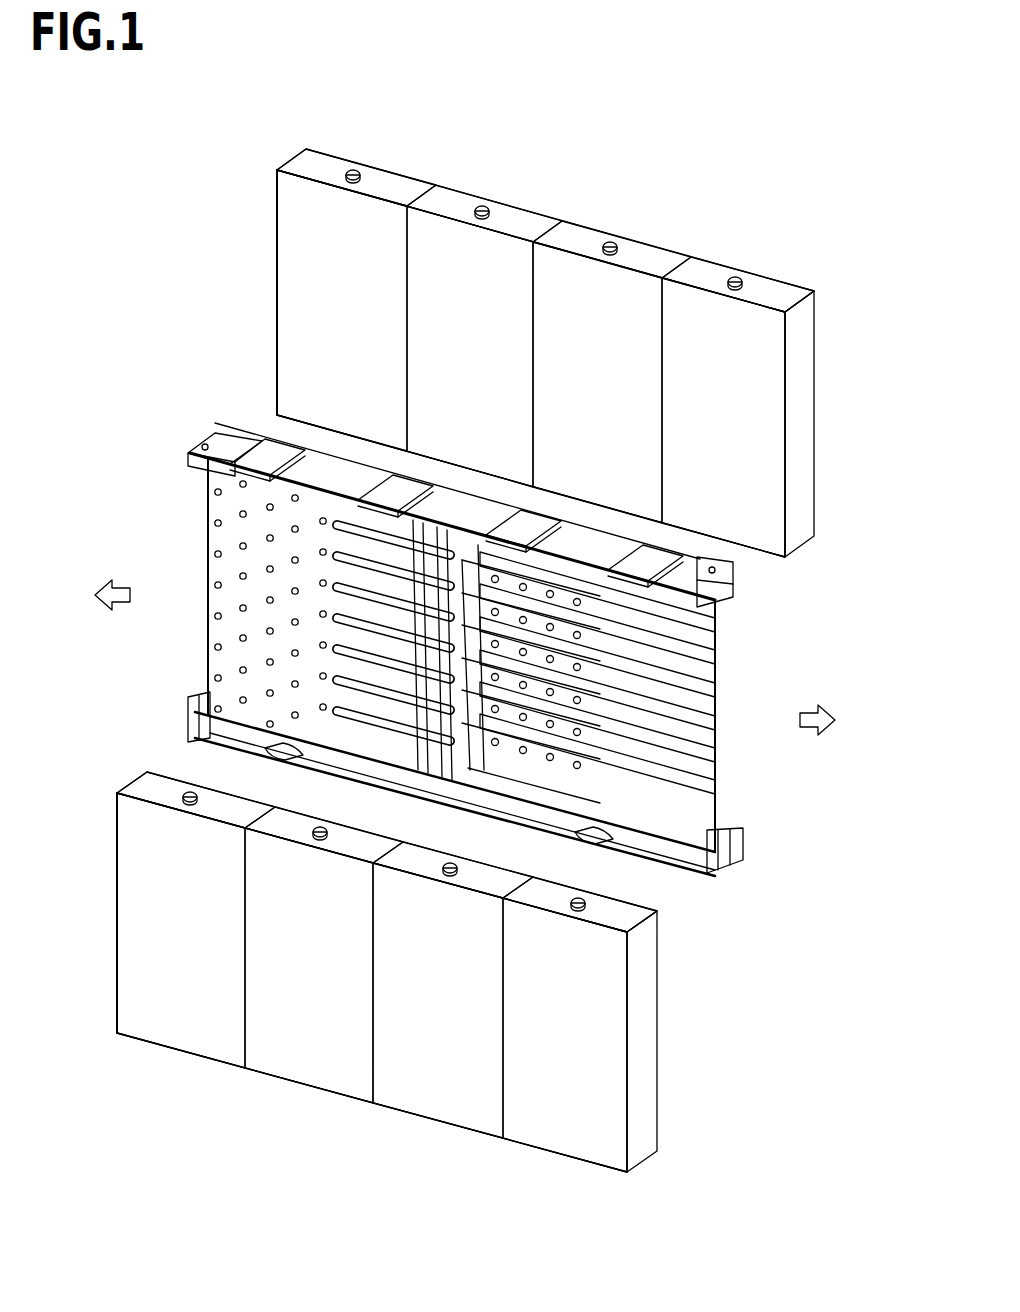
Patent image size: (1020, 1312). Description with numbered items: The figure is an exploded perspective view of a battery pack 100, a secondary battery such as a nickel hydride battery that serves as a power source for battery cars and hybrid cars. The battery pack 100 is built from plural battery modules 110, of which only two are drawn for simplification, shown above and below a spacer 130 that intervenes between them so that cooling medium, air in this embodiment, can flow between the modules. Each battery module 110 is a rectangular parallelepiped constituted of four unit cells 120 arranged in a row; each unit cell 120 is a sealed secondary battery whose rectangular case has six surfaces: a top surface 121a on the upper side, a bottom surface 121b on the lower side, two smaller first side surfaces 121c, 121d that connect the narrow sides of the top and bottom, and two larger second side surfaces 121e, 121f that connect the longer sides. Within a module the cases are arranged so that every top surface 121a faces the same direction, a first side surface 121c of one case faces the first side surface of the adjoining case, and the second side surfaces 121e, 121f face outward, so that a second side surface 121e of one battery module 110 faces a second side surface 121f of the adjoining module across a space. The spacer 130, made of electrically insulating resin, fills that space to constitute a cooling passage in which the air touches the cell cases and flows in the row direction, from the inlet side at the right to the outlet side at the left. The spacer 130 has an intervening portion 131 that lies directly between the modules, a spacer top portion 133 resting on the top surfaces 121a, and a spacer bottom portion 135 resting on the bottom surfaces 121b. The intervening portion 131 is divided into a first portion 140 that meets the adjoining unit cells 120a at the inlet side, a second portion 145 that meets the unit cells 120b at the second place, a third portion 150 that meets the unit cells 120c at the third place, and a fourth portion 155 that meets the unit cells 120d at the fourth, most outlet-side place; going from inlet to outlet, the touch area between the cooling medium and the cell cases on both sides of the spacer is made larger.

The battery pack 100 is at (162, 330).
The battery module 110 is at (453, 205).
The unit cell 120 is at (402, 185).
The unit cell at inlet side 120a is at (658, 714).
The unit cell at second place from inlet side 120b is at (532, 679).
The unit cell at third place from inlet side 120c is at (403, 644).
The unit cell at fourth place from inlet side 120d is at (276, 608).
The top surface 121a is at (318, 165).
The bottom surface 121b is at (290, 421).
The first side surface 121c is at (810, 435).
The first side surface 121d is at (268, 300).
The second side surface 121e is at (370, 165).
The second side surface 121f is at (297, 252).
The spacer 130 is at (228, 440).
The intervening portion 131 is at (705, 697).
The spacer top portion 133 is at (712, 565).
The spacer bottom portion 135 is at (668, 852).
The first portion 140 is at (700, 770).
The second portion 145 is at (545, 770).
The third portion 150 is at (370, 700).
The fourth portion 155 is at (248, 597).